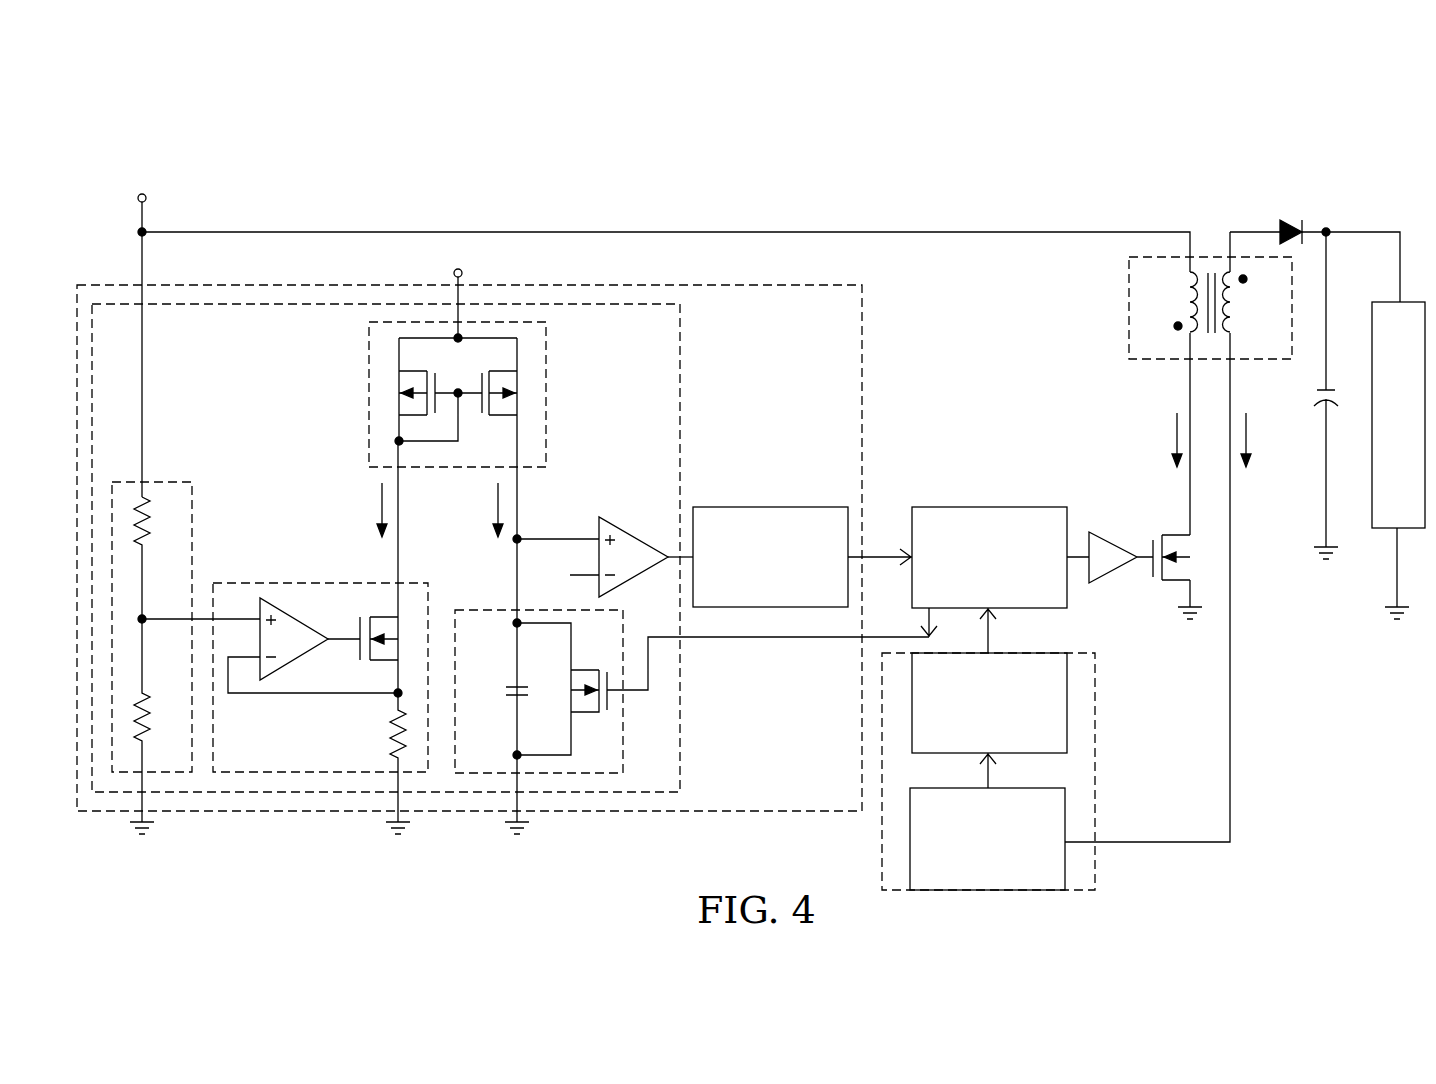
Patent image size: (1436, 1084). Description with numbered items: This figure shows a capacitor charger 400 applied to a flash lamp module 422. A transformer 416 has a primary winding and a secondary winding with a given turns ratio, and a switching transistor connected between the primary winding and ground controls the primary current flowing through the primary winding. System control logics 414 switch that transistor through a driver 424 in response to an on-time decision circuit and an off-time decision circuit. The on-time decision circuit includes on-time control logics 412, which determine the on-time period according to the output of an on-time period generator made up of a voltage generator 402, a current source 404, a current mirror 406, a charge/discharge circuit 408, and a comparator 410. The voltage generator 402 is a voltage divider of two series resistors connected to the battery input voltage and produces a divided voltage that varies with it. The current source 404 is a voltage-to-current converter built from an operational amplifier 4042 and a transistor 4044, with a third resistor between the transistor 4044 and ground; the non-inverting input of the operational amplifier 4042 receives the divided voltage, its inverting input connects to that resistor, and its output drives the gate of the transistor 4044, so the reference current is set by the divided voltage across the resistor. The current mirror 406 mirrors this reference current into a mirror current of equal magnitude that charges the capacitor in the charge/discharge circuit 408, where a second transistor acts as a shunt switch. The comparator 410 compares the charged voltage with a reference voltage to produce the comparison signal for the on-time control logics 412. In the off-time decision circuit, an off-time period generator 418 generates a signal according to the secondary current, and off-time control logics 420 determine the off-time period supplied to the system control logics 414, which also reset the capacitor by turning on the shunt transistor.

The capacitor charger 400 is at (1318, 141).
The voltage generator 402 is at (167, 482).
The current source 404 is at (250, 583).
The operational amplifier 4042 is at (297, 615).
The transistor 4044 is at (403, 612).
The current mirror 406 is at (547, 418).
The charge/discharge circuit 408 is at (623, 725).
The comparator 410 is at (620, 520).
The on-time control logics 412 is at (770, 507).
The system control logics 414 is at (980, 507).
The transformer 416 is at (1129, 307).
The off-time period generator 418 is at (1065, 820).
The off-time control logics 420 is at (1067, 700).
The flash lamp module 422 is at (1380, 528).
The driver 424 is at (1108, 533).